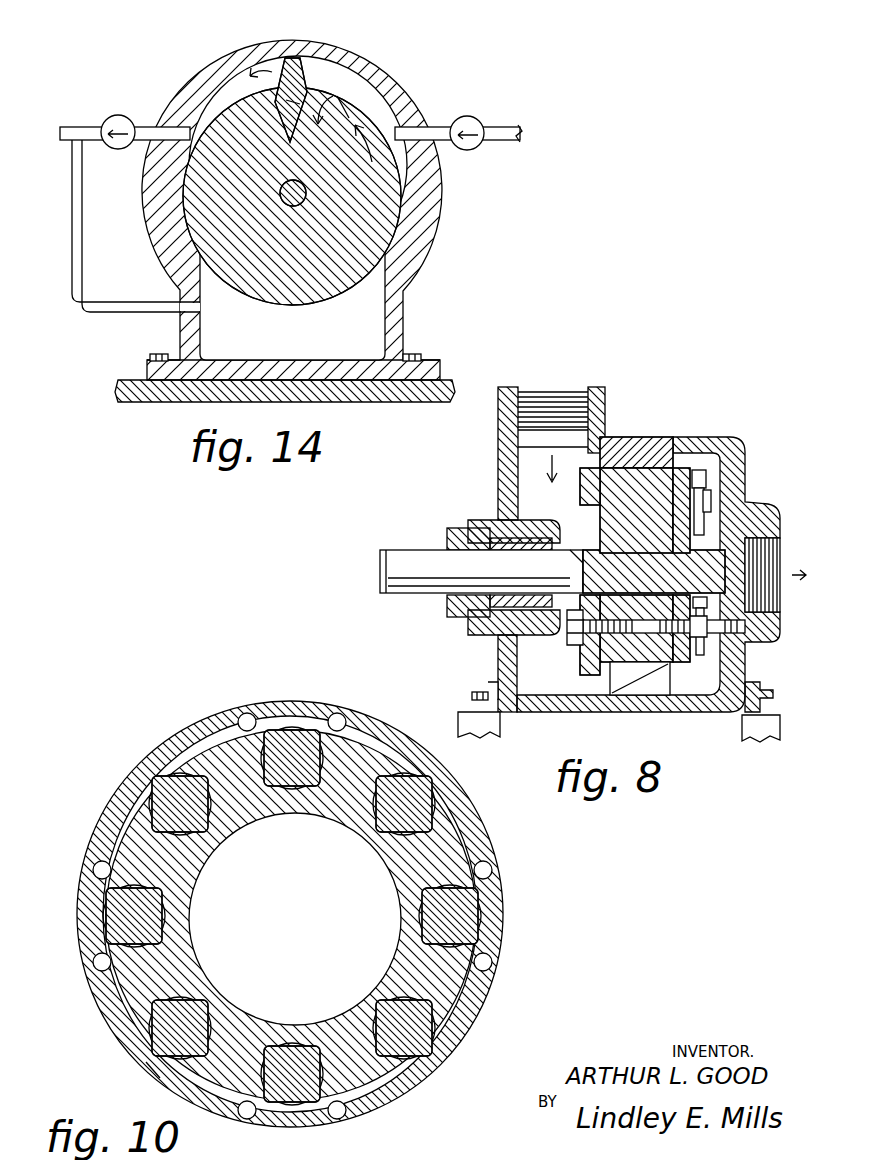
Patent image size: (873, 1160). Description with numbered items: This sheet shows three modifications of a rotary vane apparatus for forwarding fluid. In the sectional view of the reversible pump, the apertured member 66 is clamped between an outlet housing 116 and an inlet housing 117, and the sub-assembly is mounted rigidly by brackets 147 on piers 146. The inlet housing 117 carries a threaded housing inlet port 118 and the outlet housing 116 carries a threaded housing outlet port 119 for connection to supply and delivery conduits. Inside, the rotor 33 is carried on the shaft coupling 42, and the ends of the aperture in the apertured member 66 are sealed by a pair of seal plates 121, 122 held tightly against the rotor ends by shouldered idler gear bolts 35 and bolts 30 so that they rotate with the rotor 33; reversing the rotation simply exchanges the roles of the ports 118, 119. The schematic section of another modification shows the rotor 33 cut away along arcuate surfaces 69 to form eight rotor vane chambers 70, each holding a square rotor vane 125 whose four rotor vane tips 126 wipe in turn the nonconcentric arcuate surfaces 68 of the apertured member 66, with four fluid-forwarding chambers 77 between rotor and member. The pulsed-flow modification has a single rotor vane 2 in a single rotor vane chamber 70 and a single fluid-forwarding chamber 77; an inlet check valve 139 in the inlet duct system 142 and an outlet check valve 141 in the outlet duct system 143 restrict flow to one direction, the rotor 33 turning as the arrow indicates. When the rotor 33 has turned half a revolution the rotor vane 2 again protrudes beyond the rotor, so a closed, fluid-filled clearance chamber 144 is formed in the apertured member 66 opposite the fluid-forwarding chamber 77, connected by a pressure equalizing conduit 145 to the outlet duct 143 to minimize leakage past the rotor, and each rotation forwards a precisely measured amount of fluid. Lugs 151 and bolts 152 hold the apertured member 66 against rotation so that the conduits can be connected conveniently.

In FIG. 14, the rotor vane 2 is at (302, 84).
In FIG. 8, the bolts 30 is at (568, 630).
In FIG. 14, the rotor 33 is at (405, 210).
In FIG. 8, the rotor 33 is at (610, 487).
In FIG. 10, the rotor 33 is at (106, 1012).
In FIG. 8, the idler gear bolts 35 is at (608, 712).
In FIG. 8, the shaft coupling 42 is at (398, 560).
In FIG. 14, the apertured member 66 is at (352, 72).
In FIG. 8, the apertured member 66 is at (649, 438).
In FIG. 10, the apertured member 66 is at (104, 990).
In FIG. 14, the nonconcentric arcuate surfaces 68 is at (284, 58).
In FIG. 10, the nonconcentric arcuate surfaces 68 is at (240, 1118).
In FIG. 14, the arcuate surfaces 69 is at (336, 100).
In FIG. 14, the rotor vane cavity 70 is at (268, 110).
In FIG. 10, the rotor vane cavity 70 is at (214, 803).
In FIG. 14, the fluid-forwarding chamber 77 is at (358, 93).
In FIG. 10, the fluid-forwarding chamber 77 is at (188, 756).
In FIG. 8, the outlet housing 116 is at (735, 443).
In FIG. 8, the inlet housing 117 is at (505, 644).
In FIG. 8, the housing inlet port 118 is at (566, 402).
In FIG. 8, the housing outlet port 119 is at (784, 548).
In FIG. 8, the seal plate 121 is at (590, 662).
In FIG. 8, the seal plate 122 is at (673, 467).
In FIG. 10, the square rotor vane 125 is at (134, 1054).
In FIG. 10, the rotor vane tips 126 is at (150, 1072).
In FIG. 14, the inlet check valve 139 is at (475, 122).
In FIG. 14, the outlet check valve 141 is at (127, 118).
In FIG. 14, the inlet duct system 142 is at (503, 142).
In FIG. 14, the outlet duct system 143 is at (92, 127).
In FIG. 14, the clearance chamber 144 is at (345, 320).
In FIG. 14, the pressure equalizing conduit 145 is at (80, 314).
In FIG. 8, the piers 146 is at (476, 728).
In FIG. 8, the brackets 147 is at (490, 688).
In FIG. 14, the lugs 151 is at (430, 378).
In FIG. 14, the bolts 152 is at (412, 356).